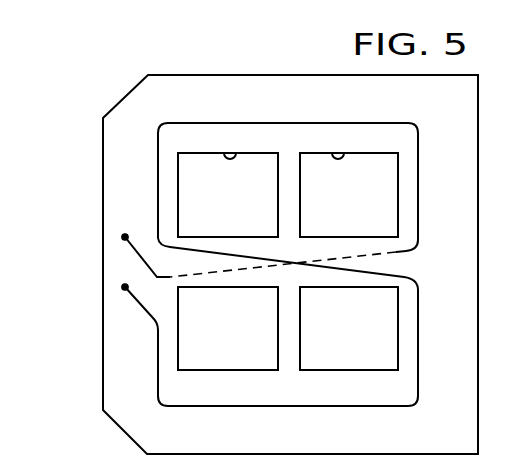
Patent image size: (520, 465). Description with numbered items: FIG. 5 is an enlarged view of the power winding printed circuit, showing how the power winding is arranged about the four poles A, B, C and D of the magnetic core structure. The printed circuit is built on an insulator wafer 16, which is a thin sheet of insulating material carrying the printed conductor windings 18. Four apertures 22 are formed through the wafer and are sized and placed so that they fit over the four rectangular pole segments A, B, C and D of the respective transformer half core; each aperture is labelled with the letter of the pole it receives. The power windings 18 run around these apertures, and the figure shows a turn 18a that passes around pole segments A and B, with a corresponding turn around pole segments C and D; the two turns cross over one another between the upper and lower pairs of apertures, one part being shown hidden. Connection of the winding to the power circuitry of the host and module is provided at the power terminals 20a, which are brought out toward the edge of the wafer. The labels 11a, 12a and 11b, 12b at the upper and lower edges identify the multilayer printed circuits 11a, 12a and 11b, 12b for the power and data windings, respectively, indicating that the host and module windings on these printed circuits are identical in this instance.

The insulator wafer 16 is at (127, 95).
The power winding printed circuit 11a is at (275, 53).
The data winding printed circuit 12a is at (190, 75).
The power winding printed circuit 11b is at (275, 459).
The data winding printed circuit 12b is at (275, 459).
The printed conductor windings 18 is at (271, 243).
The turn 18a is at (324, 123).
The power terminals 20a is at (125, 237).
The apertures 22 is at (237, 152).